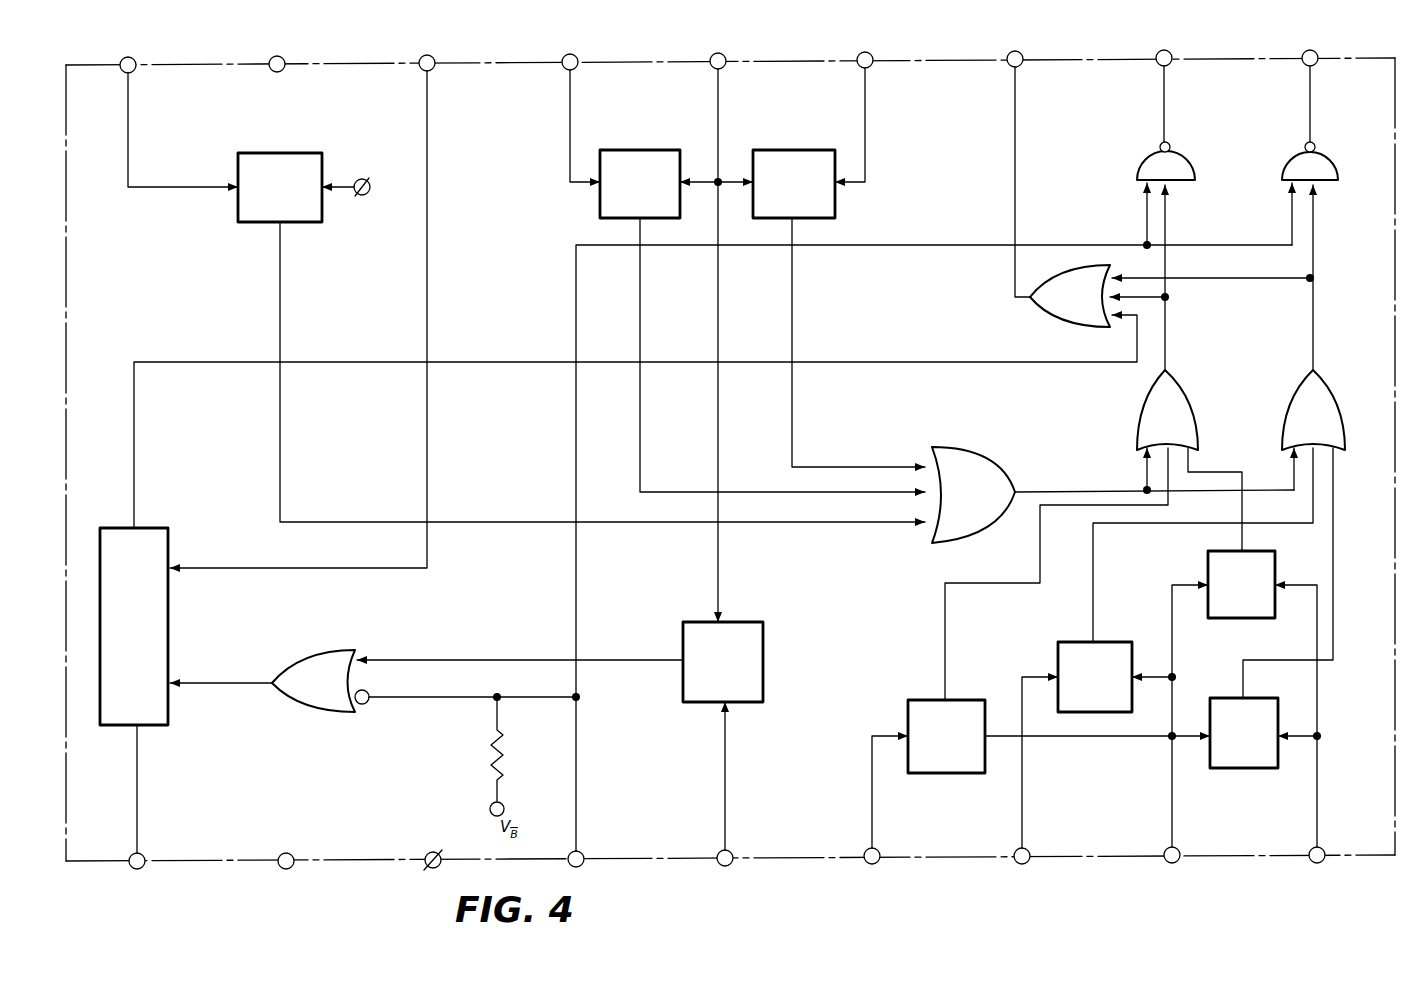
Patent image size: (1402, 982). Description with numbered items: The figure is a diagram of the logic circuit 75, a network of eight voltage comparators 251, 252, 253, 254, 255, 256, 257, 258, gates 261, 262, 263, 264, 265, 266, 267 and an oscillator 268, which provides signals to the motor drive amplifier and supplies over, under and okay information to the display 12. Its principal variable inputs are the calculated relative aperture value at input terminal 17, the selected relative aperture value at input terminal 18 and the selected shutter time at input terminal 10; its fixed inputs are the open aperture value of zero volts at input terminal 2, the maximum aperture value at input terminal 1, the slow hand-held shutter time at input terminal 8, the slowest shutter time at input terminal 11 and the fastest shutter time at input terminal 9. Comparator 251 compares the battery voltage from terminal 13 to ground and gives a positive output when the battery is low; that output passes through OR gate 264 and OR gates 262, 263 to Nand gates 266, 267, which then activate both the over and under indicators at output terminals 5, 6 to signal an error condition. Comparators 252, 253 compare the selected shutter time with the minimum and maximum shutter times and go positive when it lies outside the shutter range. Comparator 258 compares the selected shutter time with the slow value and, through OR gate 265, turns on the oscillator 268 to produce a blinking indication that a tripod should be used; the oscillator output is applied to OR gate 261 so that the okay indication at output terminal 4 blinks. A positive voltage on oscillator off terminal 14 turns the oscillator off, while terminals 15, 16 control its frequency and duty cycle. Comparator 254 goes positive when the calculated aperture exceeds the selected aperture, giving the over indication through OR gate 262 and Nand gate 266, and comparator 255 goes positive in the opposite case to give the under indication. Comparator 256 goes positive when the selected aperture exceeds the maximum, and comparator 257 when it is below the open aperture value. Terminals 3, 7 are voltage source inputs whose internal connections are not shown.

The Amax input terminal 1 is at (1037, 770).
The A_o input terminal 2 is at (880, 800).
The V B-bar terminal 3 is at (277, 846).
The okay output terminal 4 is at (1017, 174).
The over output terminal 5 is at (1177, 96).
The under output terminal 6 is at (1328, 96).
The V B+ terminal 7 is at (280, 78).
The Tslow input terminal 8 is at (742, 784).
The Tmax input terminal 9 is at (873, 117).
The T_s input terminal 10 is at (716, 337).
The Tmin input terminal 11 is at (576, 118).
The display 12 is at (411, 849).
The low battery voltage input terminal 13 is at (166, 122).
The oscillator off input terminal 14 is at (918, 554).
The oscillator control terminal 15 is at (154, 797).
The oscillator control terminal 16 is at (330, 311).
The A_c-A_o input terminal 17 is at (1325, 724).
The A_s-A_o input terminal 18 is at (1179, 724).
The logic circuit 75 is at (784, 863).
The comparator 251 is at (300, 153).
The comparator 252 is at (660, 150).
The comparator 253 is at (785, 150).
The comparator 254 is at (1215, 551).
The comparator 255 is at (1218, 698).
The comparator 256 is at (1070, 642).
The comparator 257 is at (920, 700).
The comparator 258 is at (763, 630).
The OR gate 261 is at (1058, 325).
The OR gate 262 is at (1182, 392).
The OR gate 263 is at (1286, 391).
The OR gate 264 is at (960, 448).
The OR gate 265 is at (320, 665).
The Nand gate 266 is at (1145, 158).
The Nand gate 267 is at (1298, 154).
The oscillator 268 is at (170, 618).